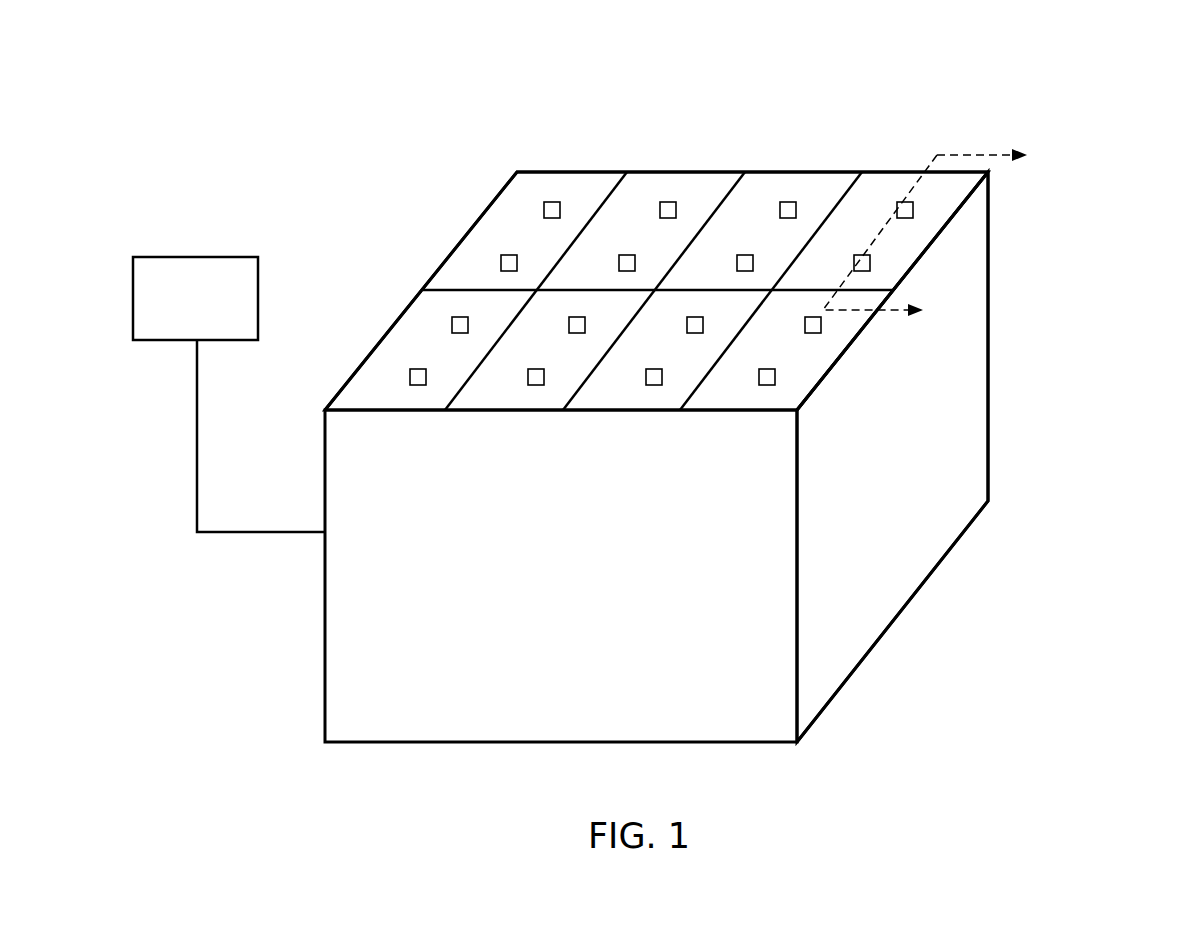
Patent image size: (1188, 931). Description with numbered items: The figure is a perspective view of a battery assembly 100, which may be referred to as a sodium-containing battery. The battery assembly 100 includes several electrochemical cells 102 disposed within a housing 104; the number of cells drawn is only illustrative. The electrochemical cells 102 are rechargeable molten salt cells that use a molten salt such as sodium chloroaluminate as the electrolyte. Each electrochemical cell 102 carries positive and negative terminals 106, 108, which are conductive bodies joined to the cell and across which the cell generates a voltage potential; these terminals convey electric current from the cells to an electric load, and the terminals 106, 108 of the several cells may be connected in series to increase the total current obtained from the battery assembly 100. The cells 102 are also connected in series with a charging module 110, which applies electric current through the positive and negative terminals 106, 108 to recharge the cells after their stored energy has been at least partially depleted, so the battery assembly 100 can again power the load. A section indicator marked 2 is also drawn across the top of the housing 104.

The battery assembly 100 is at (1083, 113).
The electrochemical cells 102 is at (592, 182).
The housing 104 is at (965, 330).
The positive terminal 106 is at (507, 253).
The negative terminal 108 is at (553, 200).
The charging module 110 is at (210, 257).
The section line for FIG. 2 is at (935, 238).